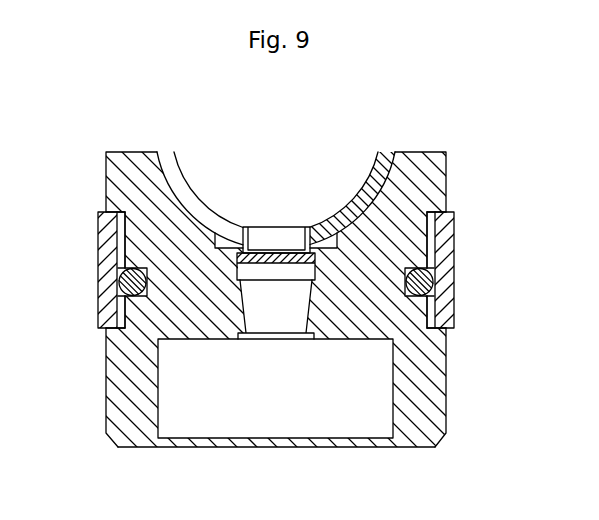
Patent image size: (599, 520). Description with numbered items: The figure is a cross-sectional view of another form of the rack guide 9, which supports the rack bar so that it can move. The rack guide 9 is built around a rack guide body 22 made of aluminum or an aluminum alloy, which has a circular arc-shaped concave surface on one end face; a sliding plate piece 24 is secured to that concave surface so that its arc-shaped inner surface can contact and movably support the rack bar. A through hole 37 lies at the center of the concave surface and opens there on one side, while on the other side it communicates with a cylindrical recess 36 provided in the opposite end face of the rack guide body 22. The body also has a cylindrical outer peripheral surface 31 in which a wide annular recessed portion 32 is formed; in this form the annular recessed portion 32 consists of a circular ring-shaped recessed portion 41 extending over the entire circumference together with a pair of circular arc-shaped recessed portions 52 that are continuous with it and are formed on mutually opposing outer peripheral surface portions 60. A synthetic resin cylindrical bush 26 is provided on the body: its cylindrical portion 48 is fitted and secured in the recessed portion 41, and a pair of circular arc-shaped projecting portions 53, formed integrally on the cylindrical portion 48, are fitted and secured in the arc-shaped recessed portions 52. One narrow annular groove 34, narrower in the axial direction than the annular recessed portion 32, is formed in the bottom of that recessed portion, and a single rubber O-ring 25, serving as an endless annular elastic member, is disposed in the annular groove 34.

The rack guide 9 is at (92, 144).
The rack guide body 22 is at (118, 368).
The sliding plate piece 24 is at (358, 208).
The O-ring 25 is at (110, 287).
The cylindrical bush 26 is at (445, 281).
The cylindrical outer peripheral surface 31 is at (446, 367).
The wide annular recessed portion 32 is at (100, 259).
The narrow annular groove 34 is at (454, 299).
The cylindrical recess 36 is at (275, 433).
The through hole 37 is at (273, 296).
The circular ring-shaped recessed portion 41 is at (452, 327).
The cylindrical portion 48 is at (102, 304).
The circular arc-shaped recessed portion 52 is at (110, 227).
The circular arc-shaped projecting portion 53 is at (99, 214).
The outer peripheral surface portion 60 is at (106, 181).